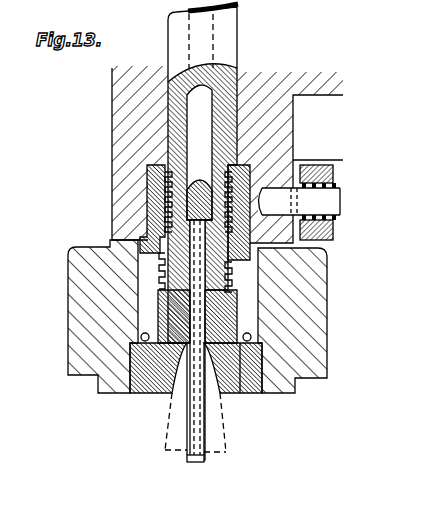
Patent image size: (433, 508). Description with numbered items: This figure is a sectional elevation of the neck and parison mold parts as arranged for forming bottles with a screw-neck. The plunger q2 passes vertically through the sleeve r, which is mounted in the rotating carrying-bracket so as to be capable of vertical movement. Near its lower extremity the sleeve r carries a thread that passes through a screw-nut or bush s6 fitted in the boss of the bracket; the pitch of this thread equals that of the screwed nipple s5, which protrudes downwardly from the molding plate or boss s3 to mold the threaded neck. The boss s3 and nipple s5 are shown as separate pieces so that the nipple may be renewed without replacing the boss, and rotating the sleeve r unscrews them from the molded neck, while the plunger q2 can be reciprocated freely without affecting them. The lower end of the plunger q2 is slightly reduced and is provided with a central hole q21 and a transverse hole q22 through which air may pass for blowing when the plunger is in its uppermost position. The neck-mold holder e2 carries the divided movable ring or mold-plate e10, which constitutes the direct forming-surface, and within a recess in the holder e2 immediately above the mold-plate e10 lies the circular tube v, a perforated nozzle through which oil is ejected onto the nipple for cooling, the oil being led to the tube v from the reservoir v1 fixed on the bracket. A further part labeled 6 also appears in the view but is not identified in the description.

The plunger q2 is at (197, 128).
The central hole q21 is at (198, 418).
The transverse hole q22 is at (160, 194).
The screw-nut or bush s6 is at (160, 203).
The sleeve r is at (185, 214).
The pipe fitting 6 is at (334, 190).
The oil reservoir v1 is at (247, 332).
The molding plate or boss s3 is at (175, 311).
The circular tube v is at (141, 345).
The neck-mold holder e2 is at (327, 349).
The screwed nipple s5 is at (153, 393).
The divided movable ring or mold-plate e10 is at (262, 396).